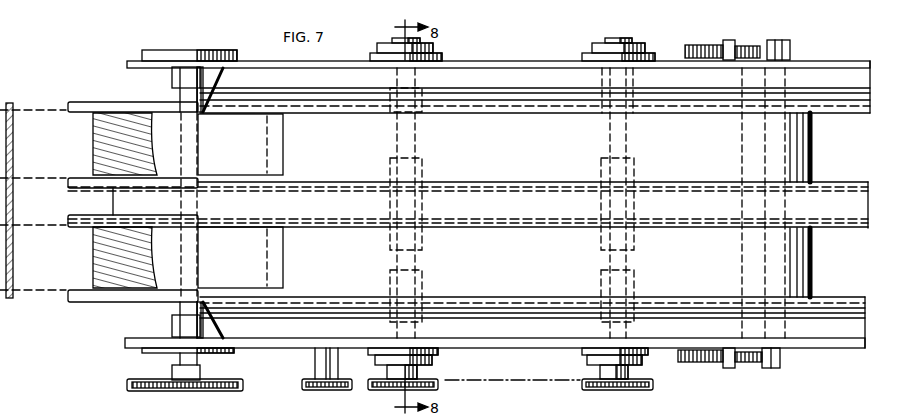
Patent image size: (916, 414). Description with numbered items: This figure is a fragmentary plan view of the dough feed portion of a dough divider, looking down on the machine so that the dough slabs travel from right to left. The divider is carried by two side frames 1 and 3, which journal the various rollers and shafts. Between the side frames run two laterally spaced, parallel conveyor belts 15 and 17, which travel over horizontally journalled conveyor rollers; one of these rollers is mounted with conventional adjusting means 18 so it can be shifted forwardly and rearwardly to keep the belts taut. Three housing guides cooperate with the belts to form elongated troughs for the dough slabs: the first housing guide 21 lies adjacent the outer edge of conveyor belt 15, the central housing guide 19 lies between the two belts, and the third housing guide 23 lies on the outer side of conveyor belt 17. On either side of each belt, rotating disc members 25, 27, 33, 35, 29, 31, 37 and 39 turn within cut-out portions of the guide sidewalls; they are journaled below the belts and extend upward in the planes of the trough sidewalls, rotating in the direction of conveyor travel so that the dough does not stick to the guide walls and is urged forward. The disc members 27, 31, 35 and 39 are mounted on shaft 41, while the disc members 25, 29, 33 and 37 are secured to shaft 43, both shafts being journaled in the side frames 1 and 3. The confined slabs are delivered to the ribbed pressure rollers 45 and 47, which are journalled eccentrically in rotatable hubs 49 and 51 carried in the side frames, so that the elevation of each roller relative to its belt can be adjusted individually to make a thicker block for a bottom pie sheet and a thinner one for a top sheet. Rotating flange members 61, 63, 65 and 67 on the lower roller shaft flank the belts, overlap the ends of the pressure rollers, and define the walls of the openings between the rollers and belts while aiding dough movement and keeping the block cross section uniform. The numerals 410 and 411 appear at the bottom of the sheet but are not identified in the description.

The side frame 1 is at (838, 349).
The side frame 3 is at (845, 61).
The conveyor belt 15 is at (662, 268).
The conveyor belt 17 is at (662, 150).
The adjusting means 18 is at (700, 45).
The central housing guide 19 is at (868, 208).
The first housing guide 21 is at (866, 332).
The third housing guide 23 is at (871, 84).
The rotating disc member 25 is at (485, 228).
The rotating disc member 27 is at (562, 228).
The rotating disc member 29 is at (482, 182).
The rotating disc member 31 is at (565, 182).
The rotating disc member 33 is at (482, 297).
The rotating disc member 35 is at (582, 297).
The rotating disc member 37 is at (478, 112).
The rotating disc member 39 is at (568, 113).
The shaft 41 is at (625, 258).
The shaft 43 is at (398, 147).
The pressure roller 45 is at (248, 143).
The pressure roller 47 is at (258, 258).
The rotatable hub 49 is at (172, 79).
The rotatable hub 51 is at (172, 325).
The rotating flange member 61 is at (73, 102).
The rotating flange member 63 is at (71, 183).
The rotating flange member 65 is at (68, 222).
The rotating flange member 67 is at (68, 290).
The base member 410 is at (750, 407).
The base member 411 is at (811, 407).